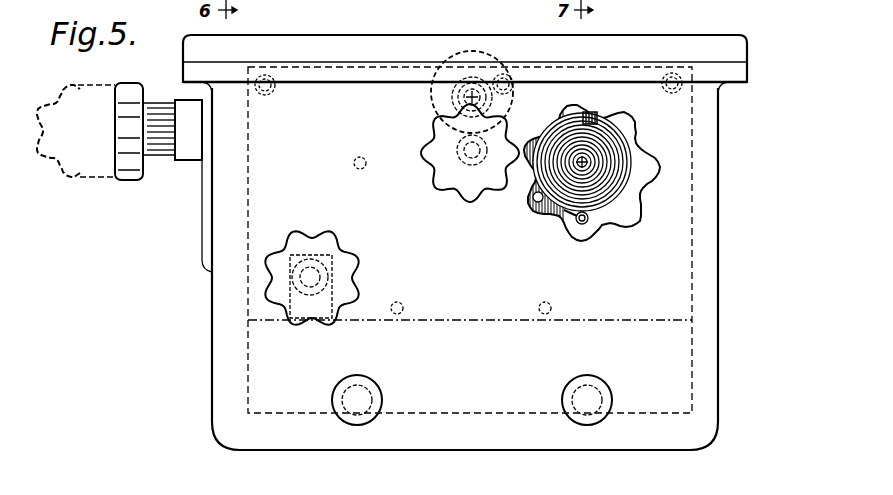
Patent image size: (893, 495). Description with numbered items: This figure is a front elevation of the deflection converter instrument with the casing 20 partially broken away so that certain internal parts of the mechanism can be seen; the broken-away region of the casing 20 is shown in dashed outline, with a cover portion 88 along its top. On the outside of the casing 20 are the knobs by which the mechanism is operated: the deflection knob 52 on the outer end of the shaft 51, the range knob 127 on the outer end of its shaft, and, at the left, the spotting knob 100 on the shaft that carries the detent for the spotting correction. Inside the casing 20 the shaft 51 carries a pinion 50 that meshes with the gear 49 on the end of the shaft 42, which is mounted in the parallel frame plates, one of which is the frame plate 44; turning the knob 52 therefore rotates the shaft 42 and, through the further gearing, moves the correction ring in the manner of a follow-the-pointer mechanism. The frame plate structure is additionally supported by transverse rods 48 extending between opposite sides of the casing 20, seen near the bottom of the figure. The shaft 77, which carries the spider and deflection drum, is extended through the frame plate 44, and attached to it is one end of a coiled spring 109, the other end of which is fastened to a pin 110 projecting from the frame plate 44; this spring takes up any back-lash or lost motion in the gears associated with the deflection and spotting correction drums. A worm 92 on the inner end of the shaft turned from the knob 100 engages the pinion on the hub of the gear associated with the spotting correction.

The casing 20 is at (708, 252).
The top cover band 88 is at (704, 44).
The knob 100 is at (128, 174).
The gear 49 is at (430, 97).
The shaft 42 is at (480, 97).
The pinion 50 is at (457, 143).
The shaft 51 is at (465, 157).
The knob 52 is at (456, 192).
The frame plate 44 is at (630, 138).
The worm 92 is at (597, 116).
The shaft 77 is at (586, 162).
The coiled spring 109 is at (620, 177).
The pin 110 is at (589, 218).
The knob 127 is at (350, 277).
The transverse rods 48 is at (345, 400).